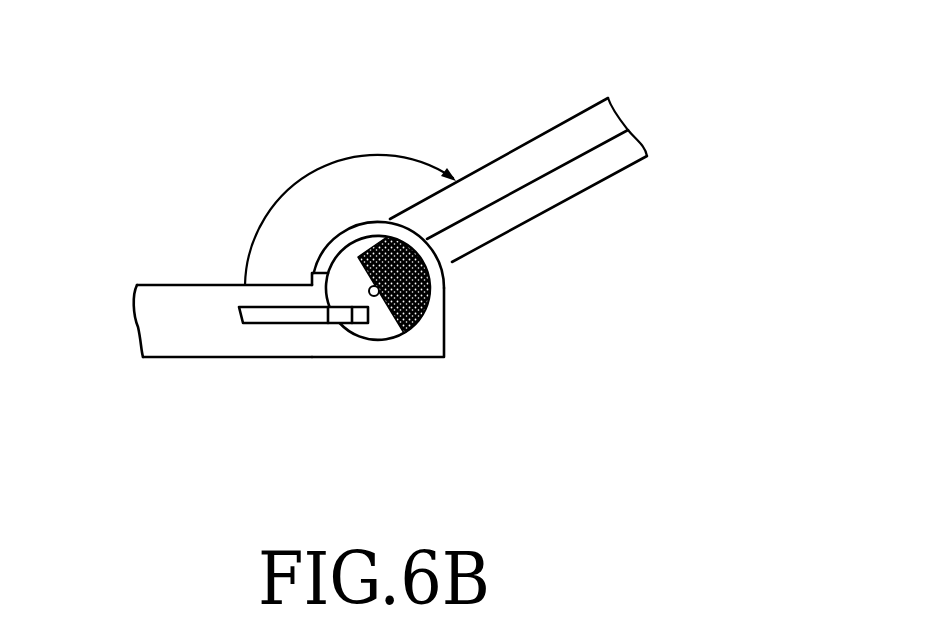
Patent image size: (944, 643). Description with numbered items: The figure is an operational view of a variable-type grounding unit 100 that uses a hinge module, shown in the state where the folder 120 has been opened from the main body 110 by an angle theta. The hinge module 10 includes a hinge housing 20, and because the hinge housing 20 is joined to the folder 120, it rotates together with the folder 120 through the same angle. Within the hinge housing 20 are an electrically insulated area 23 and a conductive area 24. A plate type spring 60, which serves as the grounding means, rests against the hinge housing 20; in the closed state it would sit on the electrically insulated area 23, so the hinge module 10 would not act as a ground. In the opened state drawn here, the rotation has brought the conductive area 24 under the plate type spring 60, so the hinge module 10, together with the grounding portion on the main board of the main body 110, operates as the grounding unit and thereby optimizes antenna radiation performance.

The variable-type grounding unit 100 is at (232, 153).
The main body 110 is at (553, 128).
The folder 120 is at (262, 358).
The hinge module 10 is at (419, 333).
The hinge housing 20 is at (323, 272).
The electrically insulated area 23 is at (445, 280).
The conductive area 24 is at (364, 328).
The plate type spring 60 is at (318, 323).